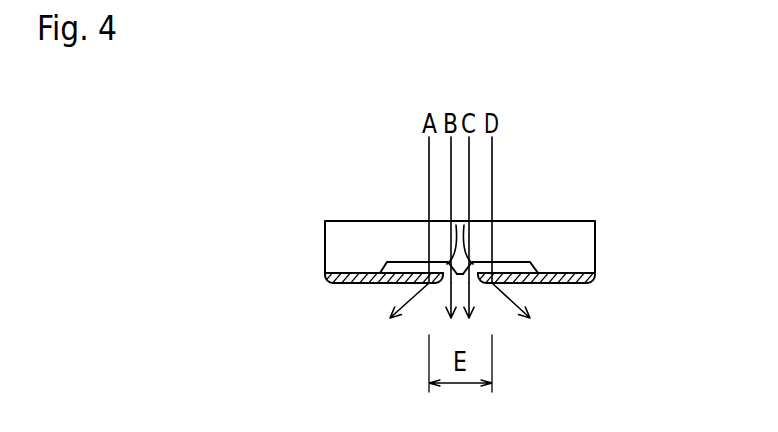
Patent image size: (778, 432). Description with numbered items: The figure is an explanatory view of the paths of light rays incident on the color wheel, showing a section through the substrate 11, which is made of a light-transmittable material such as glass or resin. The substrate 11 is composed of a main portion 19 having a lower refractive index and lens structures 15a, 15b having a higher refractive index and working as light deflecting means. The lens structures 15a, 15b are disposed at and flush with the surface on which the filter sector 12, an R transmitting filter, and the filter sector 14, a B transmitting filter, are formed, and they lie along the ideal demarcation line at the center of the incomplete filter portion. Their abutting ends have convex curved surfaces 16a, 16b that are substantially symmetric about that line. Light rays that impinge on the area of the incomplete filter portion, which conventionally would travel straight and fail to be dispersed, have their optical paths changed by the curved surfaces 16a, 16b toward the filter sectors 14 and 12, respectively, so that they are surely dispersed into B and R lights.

The substrate 11 is at (606, 225).
The filter sector 12 is at (550, 285).
The filter sector 14 is at (373, 285).
The lens structure 15a is at (398, 267).
The lens structure 15b is at (527, 268).
The curved surface 16a is at (456, 225).
The curved surface 16b is at (464, 225).
The main portion 19 is at (333, 252).